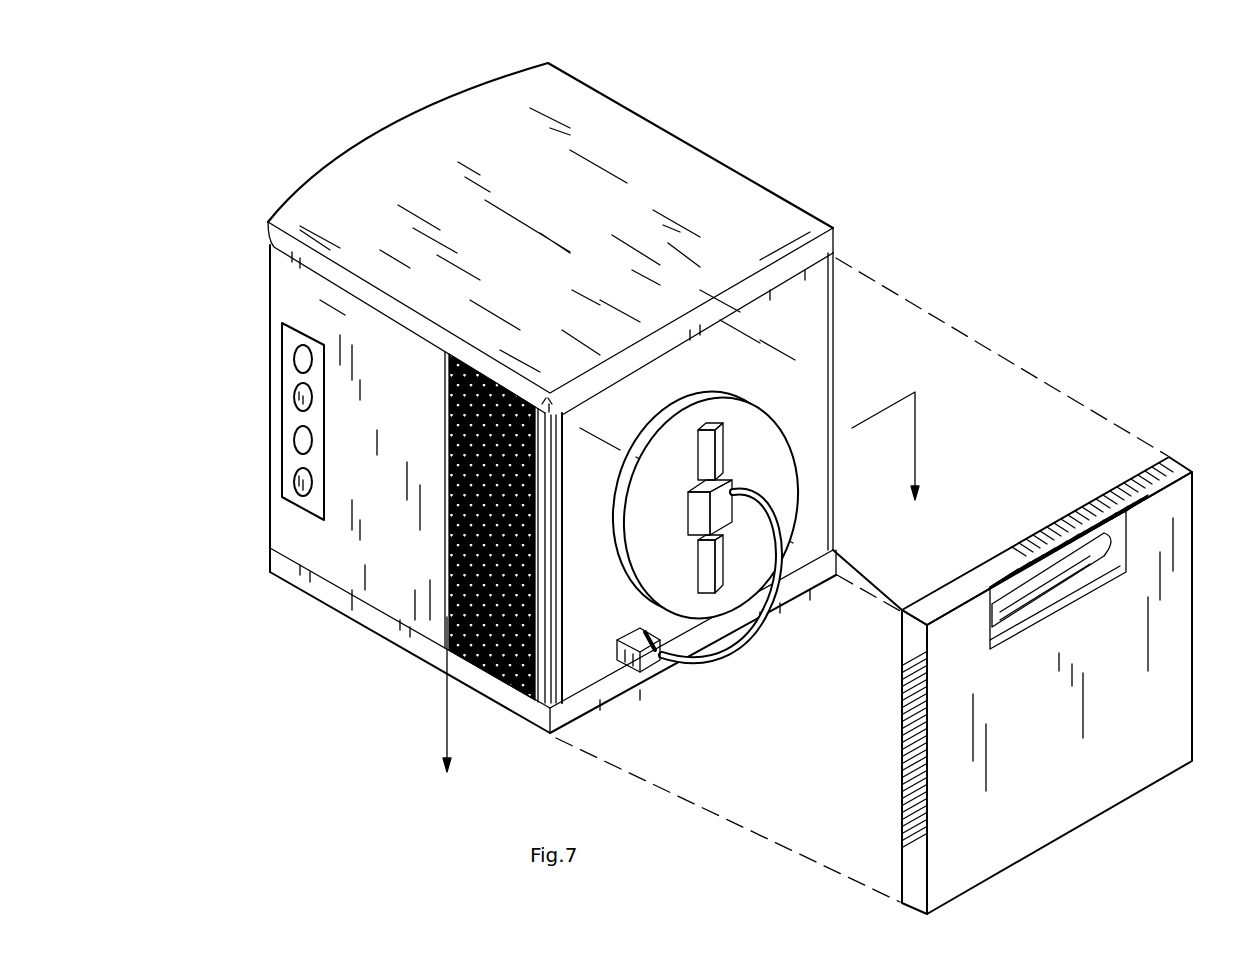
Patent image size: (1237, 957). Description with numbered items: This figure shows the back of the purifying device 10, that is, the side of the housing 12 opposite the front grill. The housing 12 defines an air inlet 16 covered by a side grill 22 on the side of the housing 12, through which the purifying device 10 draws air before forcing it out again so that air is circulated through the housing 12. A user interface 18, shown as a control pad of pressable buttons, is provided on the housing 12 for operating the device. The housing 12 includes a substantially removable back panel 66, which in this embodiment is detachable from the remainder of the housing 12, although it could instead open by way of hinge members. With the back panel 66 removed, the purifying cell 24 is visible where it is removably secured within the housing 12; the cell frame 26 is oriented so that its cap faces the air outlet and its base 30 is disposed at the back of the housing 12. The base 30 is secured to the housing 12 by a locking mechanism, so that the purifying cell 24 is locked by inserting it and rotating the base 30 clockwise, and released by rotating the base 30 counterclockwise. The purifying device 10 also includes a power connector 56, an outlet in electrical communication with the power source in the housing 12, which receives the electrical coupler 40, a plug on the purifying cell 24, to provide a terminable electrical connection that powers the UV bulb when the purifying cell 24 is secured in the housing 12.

The purifying device 10 is at (736, 124).
The housing 12 is at (761, 222).
The air inlet 16 is at (450, 615).
The user interface 18 is at (292, 418).
The side grill 22 is at (495, 677).
The purifying cell 24 is at (749, 505).
The cell frame 26 is at (749, 505).
The base 30 is at (760, 446).
The electrical coupler 40 is at (632, 657).
The power connector 56 is at (640, 632).
The back panel 66 is at (1145, 768).